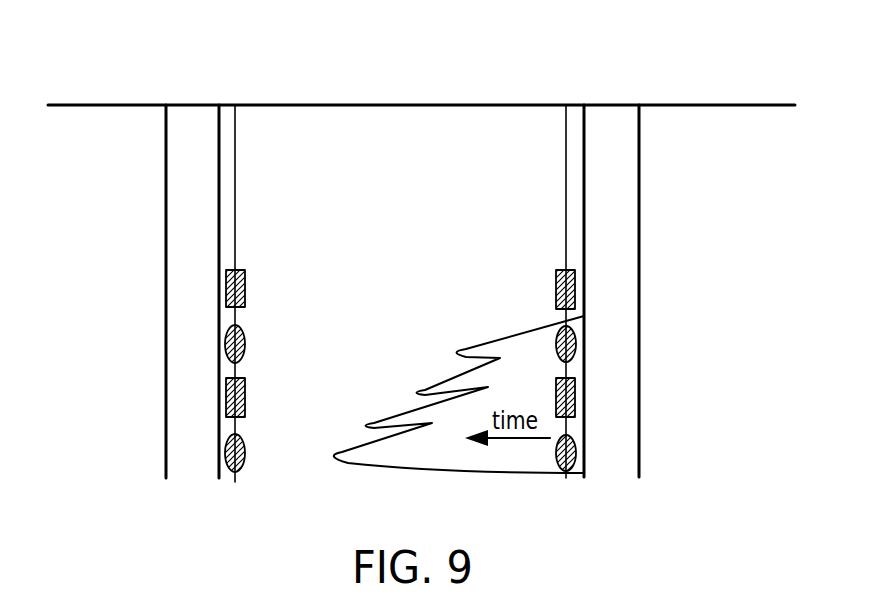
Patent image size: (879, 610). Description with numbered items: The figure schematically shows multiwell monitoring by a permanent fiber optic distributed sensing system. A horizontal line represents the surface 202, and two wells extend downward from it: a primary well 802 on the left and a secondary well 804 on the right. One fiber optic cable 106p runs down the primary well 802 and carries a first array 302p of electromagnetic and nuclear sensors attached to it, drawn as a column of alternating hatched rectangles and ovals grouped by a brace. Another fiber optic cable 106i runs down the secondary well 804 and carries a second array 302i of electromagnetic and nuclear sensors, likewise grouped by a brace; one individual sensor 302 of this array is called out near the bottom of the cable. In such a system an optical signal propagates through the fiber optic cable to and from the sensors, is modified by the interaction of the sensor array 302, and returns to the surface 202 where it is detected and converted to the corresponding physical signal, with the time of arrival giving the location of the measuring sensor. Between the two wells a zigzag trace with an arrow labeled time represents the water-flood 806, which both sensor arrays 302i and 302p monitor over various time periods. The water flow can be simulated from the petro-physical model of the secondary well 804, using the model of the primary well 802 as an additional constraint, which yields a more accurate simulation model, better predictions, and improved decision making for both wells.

The surface 202 is at (88, 102).
The primary well 802 is at (192, 120).
The secondary well 804 is at (607, 120).
The fiber optic cable 106p is at (236, 171).
The fiber optic cable 106i is at (565, 173).
The water-flood 806 is at (498, 338).
The first array of electromagnetic and nuclear sensors 302p is at (258, 268).
The second array of electromagnetic and nuclear sensors 302i is at (596, 267).
The array of electromagnetic and nuclear downhole sensors 302 is at (558, 458).